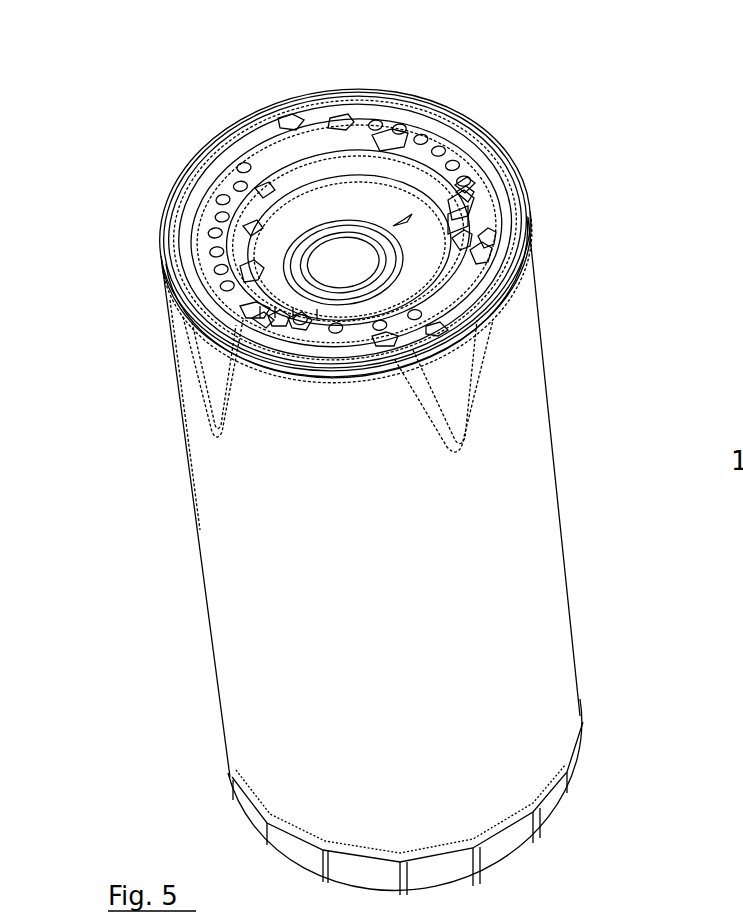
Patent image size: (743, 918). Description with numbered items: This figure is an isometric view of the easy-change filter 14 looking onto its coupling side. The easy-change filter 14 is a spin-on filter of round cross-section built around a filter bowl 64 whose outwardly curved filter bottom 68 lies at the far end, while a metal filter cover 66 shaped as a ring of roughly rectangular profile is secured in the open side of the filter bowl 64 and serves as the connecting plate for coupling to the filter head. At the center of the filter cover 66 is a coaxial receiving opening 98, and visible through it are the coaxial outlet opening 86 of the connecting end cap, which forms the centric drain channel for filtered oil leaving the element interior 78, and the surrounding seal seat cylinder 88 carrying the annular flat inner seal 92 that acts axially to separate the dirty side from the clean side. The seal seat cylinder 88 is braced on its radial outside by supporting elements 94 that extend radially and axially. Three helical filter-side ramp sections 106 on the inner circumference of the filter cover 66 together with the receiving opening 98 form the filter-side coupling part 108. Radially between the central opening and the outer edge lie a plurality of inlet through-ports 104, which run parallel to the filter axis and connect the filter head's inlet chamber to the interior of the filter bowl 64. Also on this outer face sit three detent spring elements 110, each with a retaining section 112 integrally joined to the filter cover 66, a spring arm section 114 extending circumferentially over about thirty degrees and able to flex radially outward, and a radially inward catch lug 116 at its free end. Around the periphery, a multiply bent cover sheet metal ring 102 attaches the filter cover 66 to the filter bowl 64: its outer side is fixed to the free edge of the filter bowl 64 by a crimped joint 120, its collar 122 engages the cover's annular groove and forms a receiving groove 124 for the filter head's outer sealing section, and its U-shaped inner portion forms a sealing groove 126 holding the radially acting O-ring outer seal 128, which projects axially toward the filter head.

The easy-change filter 14 is at (162, 84).
The filter bowl 64 is at (242, 738).
The filter cover 66 is at (432, 143).
The filter bottom 68 is at (552, 822).
The element interior 78 is at (366, 160).
The outlet opening 86 is at (332, 255).
The seal seat cylinder 88 is at (298, 248).
The inner seal 92 is at (257, 277).
The supporting elements 94 is at (393, 225).
The receiving opening 98 is at (262, 198).
The cover sheet metal ring 102 is at (262, 124).
The inlet through-ports 104 is at (243, 168).
The filter-side ramp sections 106 is at (255, 232).
The filter-side coupling part 108 is at (392, 162).
The detent spring elements 110 is at (286, 128).
The retaining section 112 is at (345, 262).
The spring arm section 114 is at (275, 312).
The catch lug 116 is at (295, 314).
The crimped joint 120 is at (430, 340).
The collar 122 is at (463, 197).
The receiving groove 124 is at (482, 257).
The sealing groove 126 is at (500, 213).
The outer seal 128 is at (387, 337).